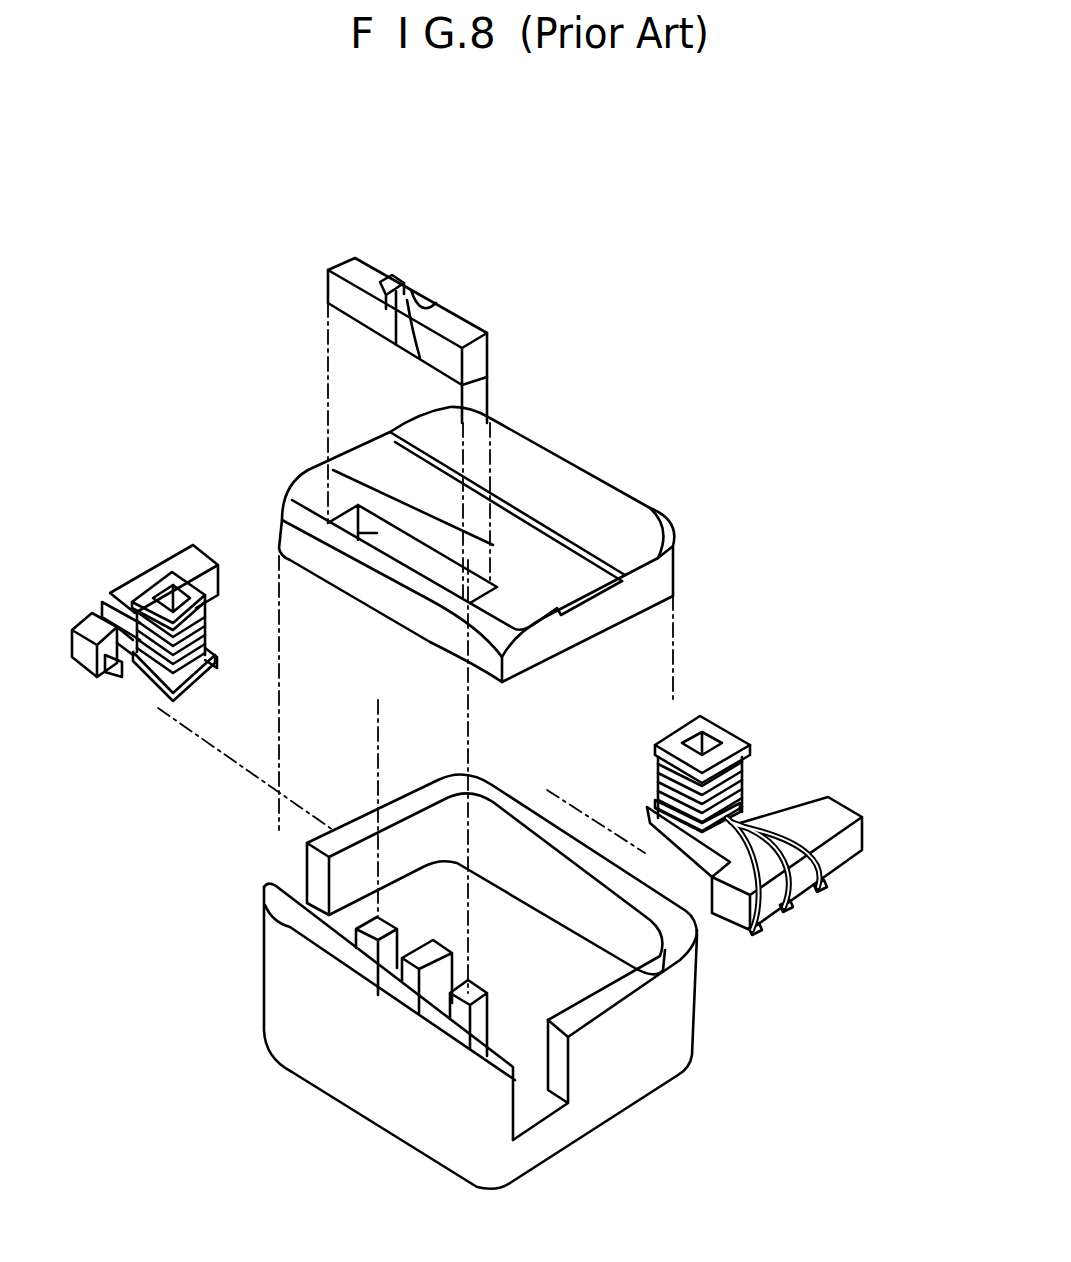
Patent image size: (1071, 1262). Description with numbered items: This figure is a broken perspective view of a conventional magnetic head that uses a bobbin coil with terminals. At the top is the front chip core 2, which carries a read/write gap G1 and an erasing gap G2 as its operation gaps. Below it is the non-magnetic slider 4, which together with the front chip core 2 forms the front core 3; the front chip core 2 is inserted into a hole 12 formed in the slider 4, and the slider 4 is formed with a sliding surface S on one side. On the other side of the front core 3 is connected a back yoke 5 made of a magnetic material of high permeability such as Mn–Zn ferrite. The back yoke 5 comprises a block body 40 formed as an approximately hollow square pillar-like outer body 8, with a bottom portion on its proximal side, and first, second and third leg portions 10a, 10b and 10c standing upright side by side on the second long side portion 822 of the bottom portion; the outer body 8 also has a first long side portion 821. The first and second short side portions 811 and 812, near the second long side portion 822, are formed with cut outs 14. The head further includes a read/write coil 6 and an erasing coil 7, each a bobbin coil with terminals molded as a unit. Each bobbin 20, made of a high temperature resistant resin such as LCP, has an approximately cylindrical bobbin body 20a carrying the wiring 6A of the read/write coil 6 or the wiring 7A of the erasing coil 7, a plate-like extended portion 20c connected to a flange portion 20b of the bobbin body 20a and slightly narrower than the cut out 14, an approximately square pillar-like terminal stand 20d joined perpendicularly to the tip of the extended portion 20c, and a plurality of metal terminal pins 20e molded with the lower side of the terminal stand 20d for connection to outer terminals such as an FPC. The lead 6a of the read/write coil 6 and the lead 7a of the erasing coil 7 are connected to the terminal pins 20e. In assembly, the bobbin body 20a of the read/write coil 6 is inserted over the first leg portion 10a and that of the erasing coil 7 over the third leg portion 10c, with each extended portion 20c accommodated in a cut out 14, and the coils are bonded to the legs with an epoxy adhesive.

The front chip core 2 is at (490, 306).
The read/write gap G1 is at (432, 292).
The erasing gap G2 is at (392, 276).
The front core 3 is at (653, 391).
The slider 4 is at (548, 453).
The sliding surface S is at (587, 510).
The hole 12 is at (300, 483).
The erasing coil 7 is at (128, 503).
The lead of the erasing coil 7a is at (105, 597).
The wiring of the erasing coil 7A is at (205, 623).
The bobbin 20 is at (172, 555).
The bobbin body 20a is at (722, 723).
The flange portion 20b is at (173, 690).
The extended portion 20c is at (137, 688).
The terminal stand 20d is at (93, 630).
The terminal pins 20e is at (102, 677).
The read/write coil 6 is at (818, 655).
The wiring of the read/write coil 6A is at (650, 760).
The lead of the read/write coil 6a is at (820, 858).
The outer body 8 is at (686, 1077).
The first short side portion 811 is at (653, 1043).
The second short side portion 812 is at (393, 800).
The first long side portion 821 is at (517, 800).
The second long side portion 822 is at (397, 1047).
The cut out 14 is at (553, 1052).
The back yoke 5 is at (230, 922).
The block body 40 is at (237, 881).
The first leg portion 10a is at (480, 1053).
The second leg portion 10b is at (405, 985).
The third leg portion 10c is at (355, 940).